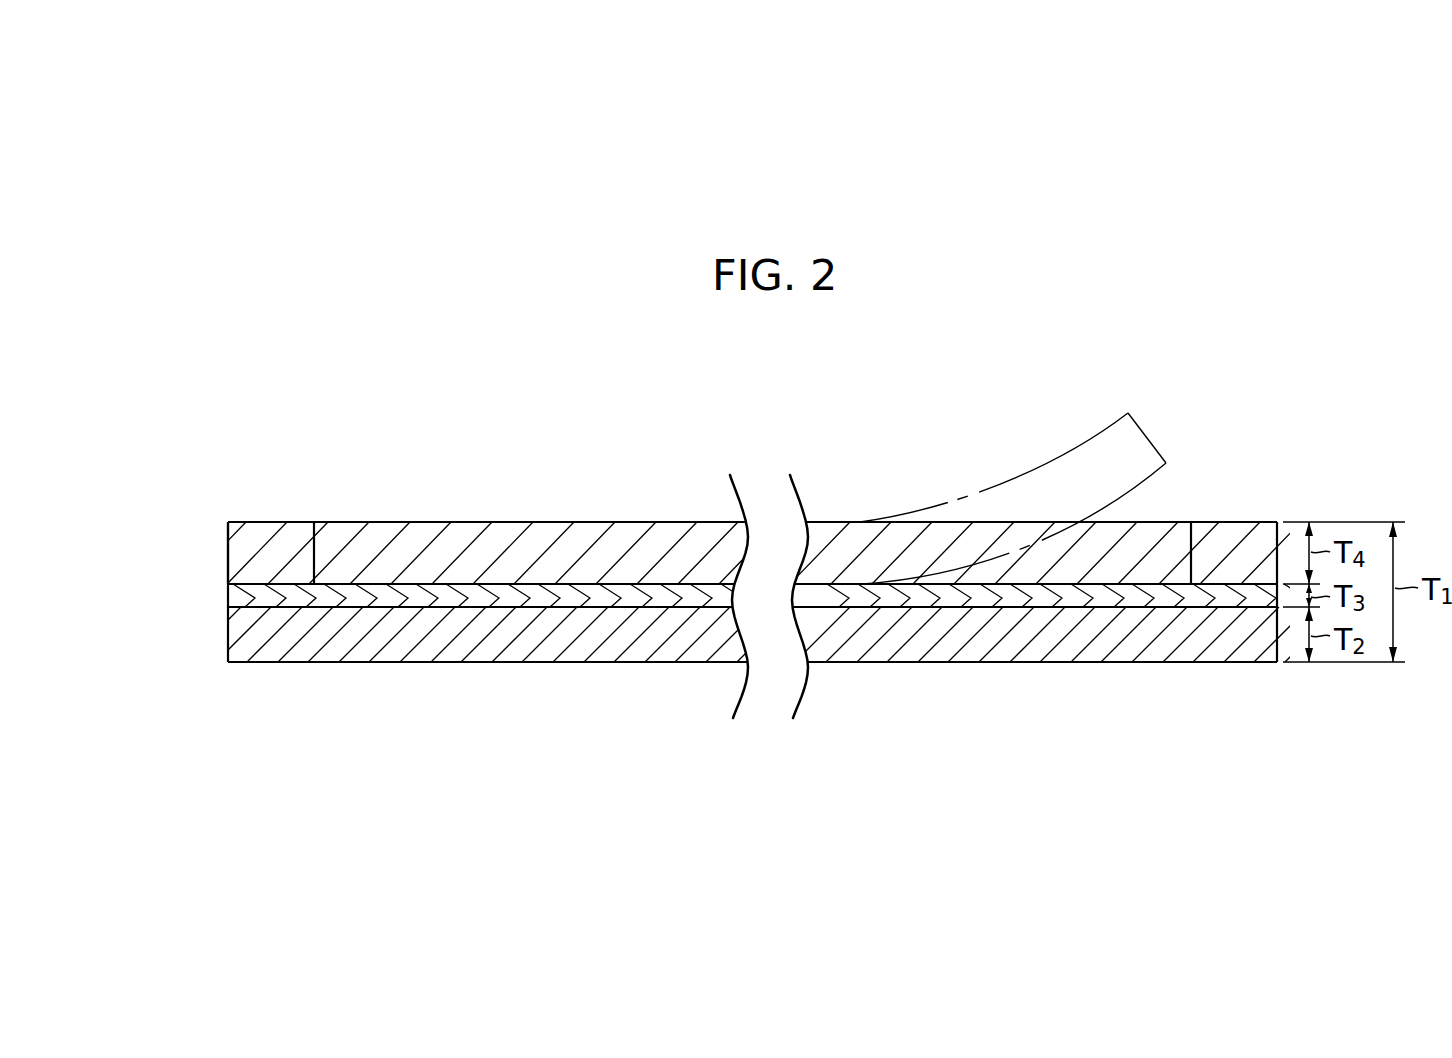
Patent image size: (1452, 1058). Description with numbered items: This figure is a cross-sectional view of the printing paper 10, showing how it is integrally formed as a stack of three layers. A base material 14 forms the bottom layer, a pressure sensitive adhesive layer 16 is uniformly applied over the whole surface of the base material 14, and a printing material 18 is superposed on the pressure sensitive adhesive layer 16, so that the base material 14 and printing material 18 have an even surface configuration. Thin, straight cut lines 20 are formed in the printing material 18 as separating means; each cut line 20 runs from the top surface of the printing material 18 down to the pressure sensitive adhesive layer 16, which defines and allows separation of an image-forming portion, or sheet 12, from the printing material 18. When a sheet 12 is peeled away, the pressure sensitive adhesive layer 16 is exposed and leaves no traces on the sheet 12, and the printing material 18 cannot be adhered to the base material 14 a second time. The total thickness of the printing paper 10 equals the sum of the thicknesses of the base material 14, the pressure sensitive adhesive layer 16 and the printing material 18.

The printing paper 10 is at (532, 680).
The image-forming portion (sheet) 12 is at (473, 516).
The base material 14 is at (274, 653).
The pressure sensitive adhesive layer 16 is at (227, 600).
The printing material 18 is at (260, 521).
The cut line 20 is at (313, 554).